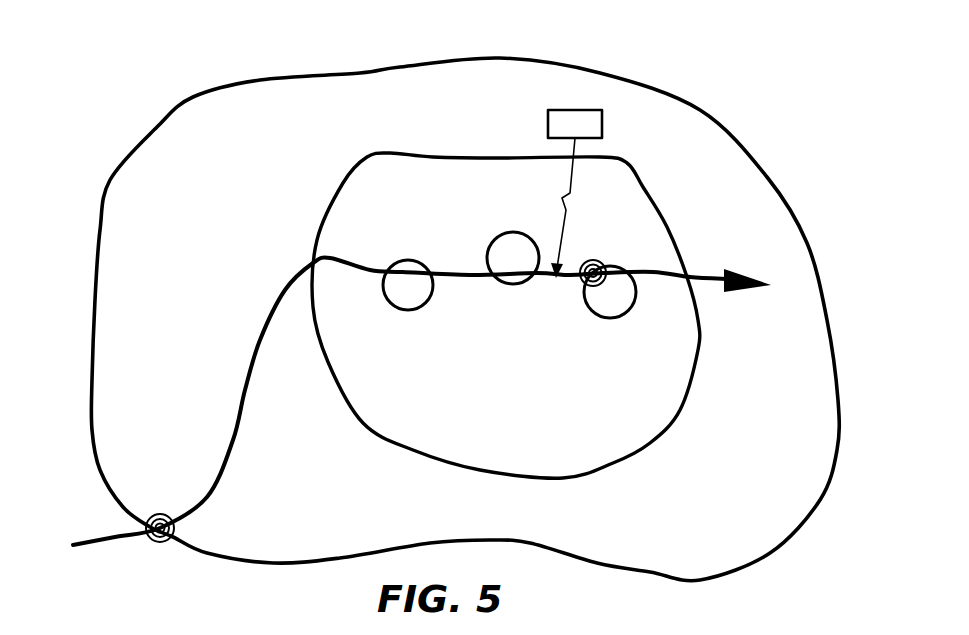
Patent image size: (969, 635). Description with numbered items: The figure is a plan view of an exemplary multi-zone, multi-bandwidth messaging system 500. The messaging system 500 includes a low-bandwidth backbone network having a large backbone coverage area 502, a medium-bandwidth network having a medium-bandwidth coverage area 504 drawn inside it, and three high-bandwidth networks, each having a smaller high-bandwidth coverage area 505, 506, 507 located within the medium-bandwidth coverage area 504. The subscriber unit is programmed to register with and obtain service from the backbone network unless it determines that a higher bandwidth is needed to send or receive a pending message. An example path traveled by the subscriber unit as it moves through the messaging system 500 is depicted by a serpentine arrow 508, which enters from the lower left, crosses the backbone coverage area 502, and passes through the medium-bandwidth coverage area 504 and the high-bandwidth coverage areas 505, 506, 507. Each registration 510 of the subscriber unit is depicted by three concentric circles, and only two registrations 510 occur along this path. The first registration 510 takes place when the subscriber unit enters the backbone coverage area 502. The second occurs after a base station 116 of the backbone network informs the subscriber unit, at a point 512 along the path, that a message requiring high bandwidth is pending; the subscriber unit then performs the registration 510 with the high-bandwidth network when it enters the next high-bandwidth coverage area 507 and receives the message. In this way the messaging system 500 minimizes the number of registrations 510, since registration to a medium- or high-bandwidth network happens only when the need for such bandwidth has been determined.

The multi-zone, multi-bandwidth messaging system 500 is at (446, 325).
The backbone coverage area 502 is at (157, 127).
The medium-bandwidth coverage area 504 is at (441, 155).
The high-bandwidth coverage area 505 is at (411, 311).
The high-bandwidth coverage area 506 is at (513, 231).
The high-bandwidth coverage area 507 is at (612, 319).
The serpentine arrow 508 is at (111, 548).
The registration 510 is at (598, 261).
The point 512 is at (556, 285).
The base station 116 is at (588, 110).